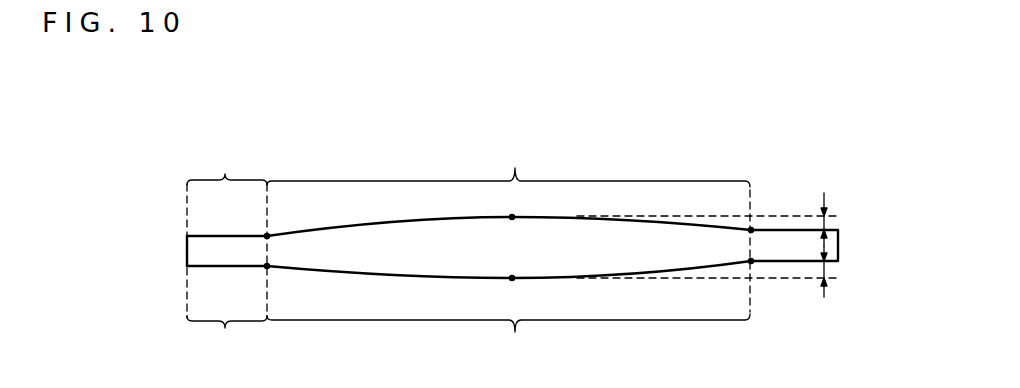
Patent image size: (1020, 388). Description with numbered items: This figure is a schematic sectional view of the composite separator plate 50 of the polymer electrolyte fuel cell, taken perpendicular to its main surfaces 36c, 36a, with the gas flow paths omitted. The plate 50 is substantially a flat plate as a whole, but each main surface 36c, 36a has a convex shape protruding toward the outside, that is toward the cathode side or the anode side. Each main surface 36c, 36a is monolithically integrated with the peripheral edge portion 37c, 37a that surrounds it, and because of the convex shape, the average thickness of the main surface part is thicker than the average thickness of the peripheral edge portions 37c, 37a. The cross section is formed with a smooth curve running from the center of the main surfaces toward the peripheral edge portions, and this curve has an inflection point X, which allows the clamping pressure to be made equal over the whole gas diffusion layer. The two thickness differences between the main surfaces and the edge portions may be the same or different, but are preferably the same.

The composite separator plate 50 is at (688, 166).
The main surface 36a is at (509, 314).
The main surface 36c is at (509, 186).
The peripheral edge portion 37a is at (227, 307).
The peripheral edge portion 37c is at (227, 198).
The inflection point X is at (267, 236).